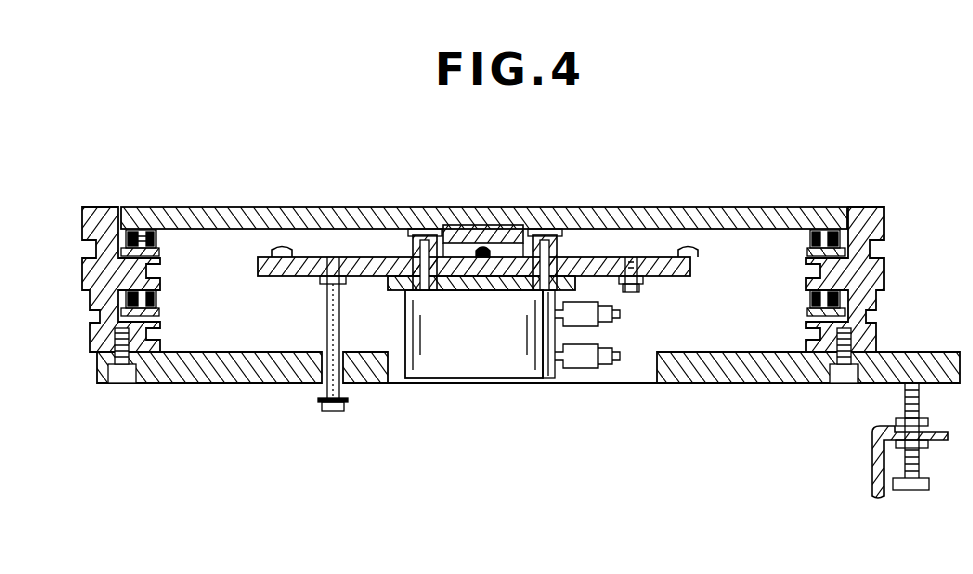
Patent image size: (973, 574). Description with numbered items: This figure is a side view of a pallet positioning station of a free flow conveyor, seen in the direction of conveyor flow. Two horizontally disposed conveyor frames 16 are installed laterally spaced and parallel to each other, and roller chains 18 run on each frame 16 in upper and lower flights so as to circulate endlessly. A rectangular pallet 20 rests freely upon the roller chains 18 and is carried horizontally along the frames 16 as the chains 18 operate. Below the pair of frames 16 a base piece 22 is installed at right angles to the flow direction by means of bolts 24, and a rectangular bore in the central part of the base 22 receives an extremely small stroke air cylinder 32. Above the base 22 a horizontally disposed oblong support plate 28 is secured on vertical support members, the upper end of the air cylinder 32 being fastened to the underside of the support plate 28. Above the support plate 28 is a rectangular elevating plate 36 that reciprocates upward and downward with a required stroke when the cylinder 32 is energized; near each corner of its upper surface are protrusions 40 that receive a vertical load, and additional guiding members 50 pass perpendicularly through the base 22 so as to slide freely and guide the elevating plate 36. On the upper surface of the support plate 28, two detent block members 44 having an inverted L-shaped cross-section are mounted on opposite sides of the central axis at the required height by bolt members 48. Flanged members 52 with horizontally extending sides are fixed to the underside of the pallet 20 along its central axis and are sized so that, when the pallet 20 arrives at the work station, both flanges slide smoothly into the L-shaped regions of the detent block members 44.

The conveyor frame 16 is at (82, 272).
The roller chain 18 is at (146, 232).
The pallet 20 is at (772, 207).
The base piece 22 is at (214, 365).
The bolt 24 is at (122, 385).
The support plate 28 is at (392, 290).
The air cylinder 32 is at (480, 385).
The elevating plate 36 is at (310, 257).
The protrusion 40 is at (272, 252).
The detent block member 44 is at (425, 232).
The bolt member 48 is at (440, 225).
The guiding member 50 is at (327, 322).
The flanged member 52 is at (506, 225).